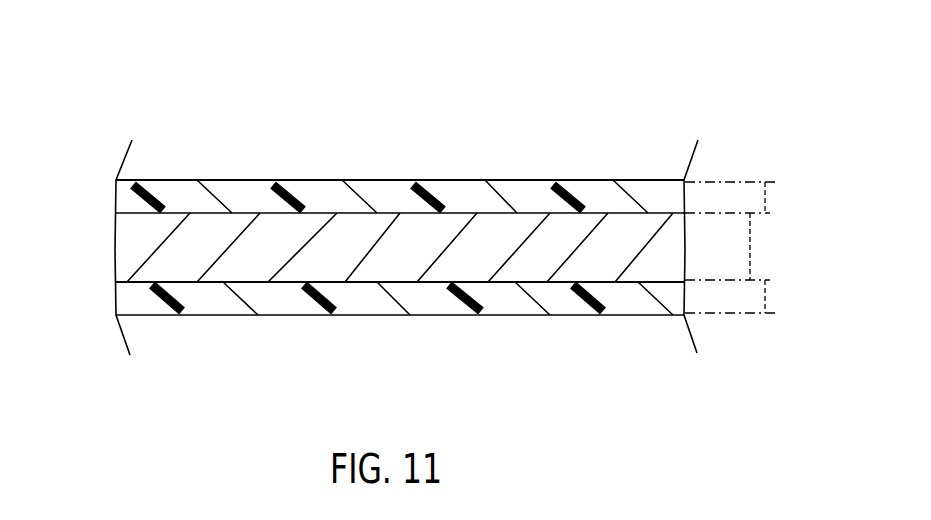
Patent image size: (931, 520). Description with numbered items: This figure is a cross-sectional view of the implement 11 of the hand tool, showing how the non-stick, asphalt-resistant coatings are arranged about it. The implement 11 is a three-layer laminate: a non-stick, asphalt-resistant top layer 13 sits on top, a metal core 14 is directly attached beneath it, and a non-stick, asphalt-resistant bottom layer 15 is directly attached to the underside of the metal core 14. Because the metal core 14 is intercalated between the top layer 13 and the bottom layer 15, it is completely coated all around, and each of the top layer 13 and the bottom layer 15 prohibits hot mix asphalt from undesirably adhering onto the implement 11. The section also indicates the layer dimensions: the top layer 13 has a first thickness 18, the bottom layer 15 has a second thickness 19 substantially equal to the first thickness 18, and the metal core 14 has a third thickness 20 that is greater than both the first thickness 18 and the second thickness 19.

The implement 11 is at (313, 94).
The non-stick, asphalt-resistant top layer 13 is at (382, 180).
The metal core 14 is at (123, 232).
The non-stick, asphalt-resistant bottom layer 15 is at (377, 315).
The first thickness 18 is at (767, 205).
The second thickness 19 is at (770, 302).
The third thickness 20 is at (758, 253).